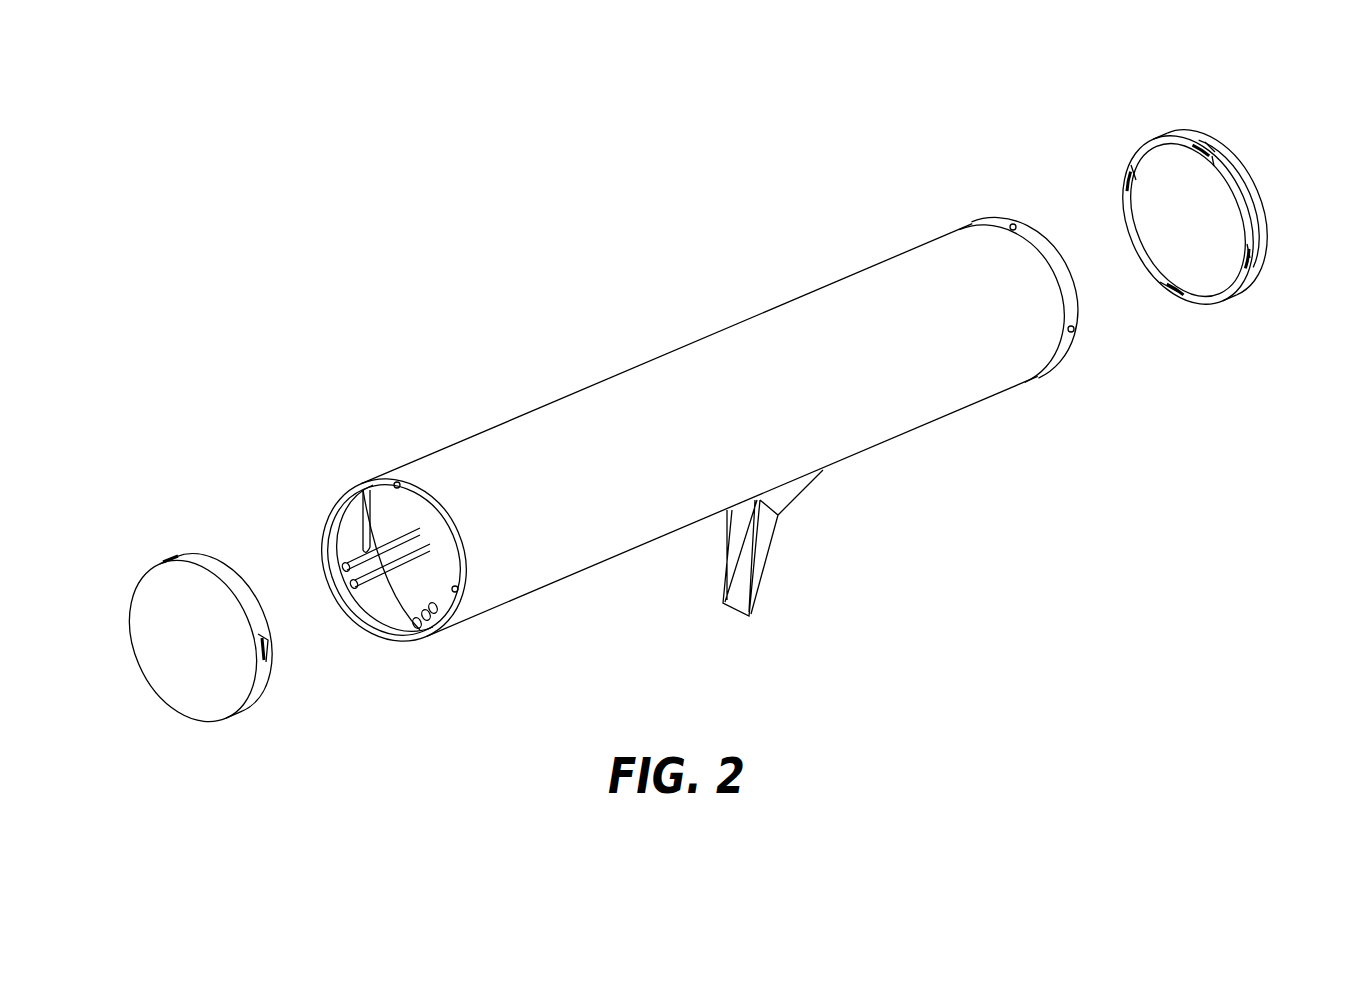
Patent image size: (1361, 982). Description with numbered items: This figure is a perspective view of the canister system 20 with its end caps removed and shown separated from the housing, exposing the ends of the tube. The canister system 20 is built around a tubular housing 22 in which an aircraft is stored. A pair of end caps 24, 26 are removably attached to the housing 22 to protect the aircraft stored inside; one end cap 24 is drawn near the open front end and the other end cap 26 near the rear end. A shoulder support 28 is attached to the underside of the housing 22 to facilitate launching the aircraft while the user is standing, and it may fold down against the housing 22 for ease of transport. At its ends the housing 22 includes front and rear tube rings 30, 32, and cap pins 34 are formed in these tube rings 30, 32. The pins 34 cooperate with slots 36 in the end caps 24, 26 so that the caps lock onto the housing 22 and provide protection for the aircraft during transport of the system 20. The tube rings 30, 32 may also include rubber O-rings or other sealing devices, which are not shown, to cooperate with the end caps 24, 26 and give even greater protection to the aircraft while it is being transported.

The canister system 20 is at (717, 256).
The tubular housing 22 is at (900, 254).
The end cap 24 is at (134, 606).
The end cap 26 is at (1268, 210).
The shoulder support 28 is at (776, 560).
The front tube ring 30 is at (360, 486).
The rear tube ring 32 is at (998, 218).
The cap pin 34 is at (397, 482).
The slot 36 is at (1133, 160).